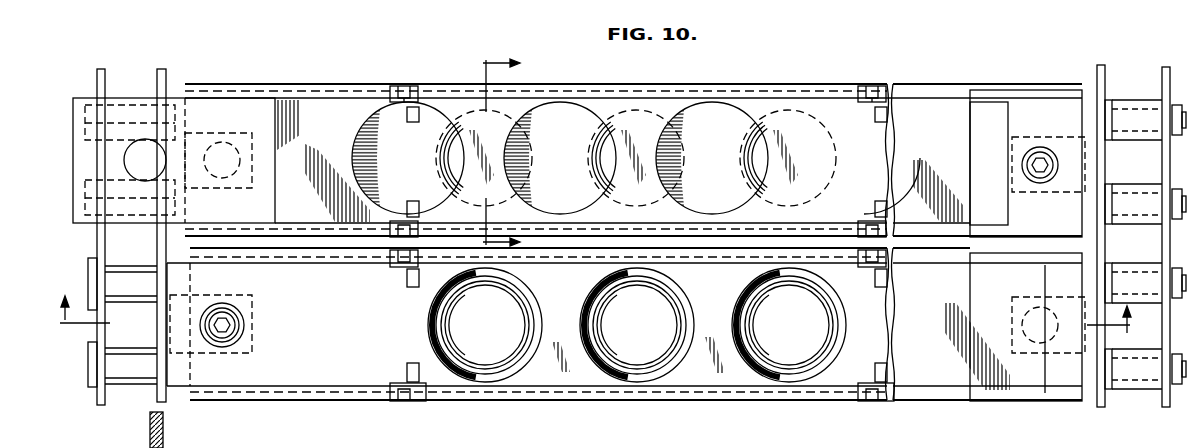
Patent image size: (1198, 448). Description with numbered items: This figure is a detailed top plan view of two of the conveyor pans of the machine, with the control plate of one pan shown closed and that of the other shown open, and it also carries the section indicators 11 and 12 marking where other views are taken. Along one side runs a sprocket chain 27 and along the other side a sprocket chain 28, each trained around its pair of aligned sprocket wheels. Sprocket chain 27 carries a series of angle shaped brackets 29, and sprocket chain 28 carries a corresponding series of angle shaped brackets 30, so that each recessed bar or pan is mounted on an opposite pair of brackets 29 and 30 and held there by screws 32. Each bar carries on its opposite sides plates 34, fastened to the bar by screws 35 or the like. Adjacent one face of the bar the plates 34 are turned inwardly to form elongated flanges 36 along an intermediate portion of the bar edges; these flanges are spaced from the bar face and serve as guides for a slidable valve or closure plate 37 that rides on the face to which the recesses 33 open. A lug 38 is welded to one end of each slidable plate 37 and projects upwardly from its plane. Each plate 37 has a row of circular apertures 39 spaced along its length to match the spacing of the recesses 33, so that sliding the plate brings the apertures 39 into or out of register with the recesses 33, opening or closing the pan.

The section line 11- 11 is at (599, 321).
The section line 12- 12 is at (493, 151).
The sprocket chain 27 is at (97, 248).
The sprocket chain 28 is at (1113, 95).
The angle shaped bracket 29 is at (180, 130).
The angle shaped bracket 30 is at (1088, 140).
The screw 32 is at (230, 335).
The recess 33 is at (517, 153).
The plate 34 is at (550, 401).
The screw 35 is at (432, 376).
The elongated flange 36 is at (515, 381).
The slidable valve or closure plate 37 is at (342, 127).
The lug 38 is at (73, 122).
The circular aperture 39 is at (442, 115).